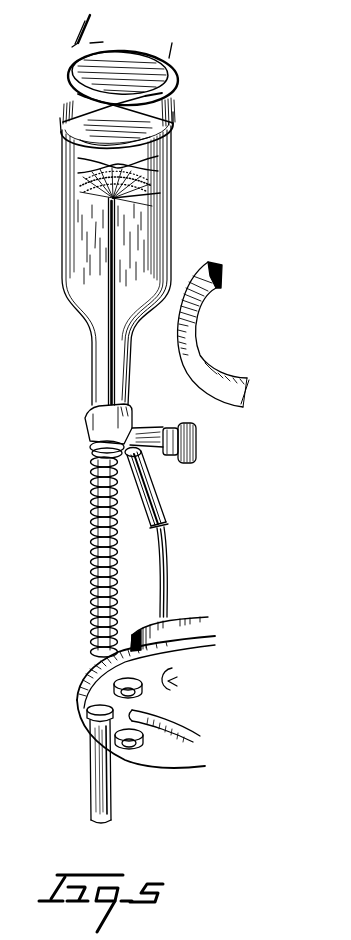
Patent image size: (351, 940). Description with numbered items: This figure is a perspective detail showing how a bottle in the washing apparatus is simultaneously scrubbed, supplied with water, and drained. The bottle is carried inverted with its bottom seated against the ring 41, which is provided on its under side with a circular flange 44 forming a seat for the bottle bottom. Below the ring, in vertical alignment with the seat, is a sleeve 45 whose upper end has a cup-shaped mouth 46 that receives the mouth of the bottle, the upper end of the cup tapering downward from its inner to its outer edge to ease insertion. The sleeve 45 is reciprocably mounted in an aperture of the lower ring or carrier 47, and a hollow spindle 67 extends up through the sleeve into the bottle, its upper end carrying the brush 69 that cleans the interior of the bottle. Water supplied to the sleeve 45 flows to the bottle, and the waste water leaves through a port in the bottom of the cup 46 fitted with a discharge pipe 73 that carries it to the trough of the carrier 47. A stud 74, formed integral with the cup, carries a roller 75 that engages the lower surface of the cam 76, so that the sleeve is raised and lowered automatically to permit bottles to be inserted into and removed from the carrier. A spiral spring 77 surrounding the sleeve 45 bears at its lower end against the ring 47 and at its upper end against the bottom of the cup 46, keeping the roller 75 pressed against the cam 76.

The ring 41 is at (147, 50).
The circular flange 44 is at (174, 96).
The brush 69 is at (105, 196).
The hollow spindle 67 is at (107, 292).
The cam 76 is at (193, 357).
The cup-shaped mouth 46 is at (88, 427).
The stud 74 is at (153, 437).
The roller 75 is at (181, 462).
The discharge pipe 73 is at (157, 492).
The spiral spring 77 is at (91, 550).
The sleeve 45 is at (115, 572).
The ring or carrier 47 is at (82, 705).